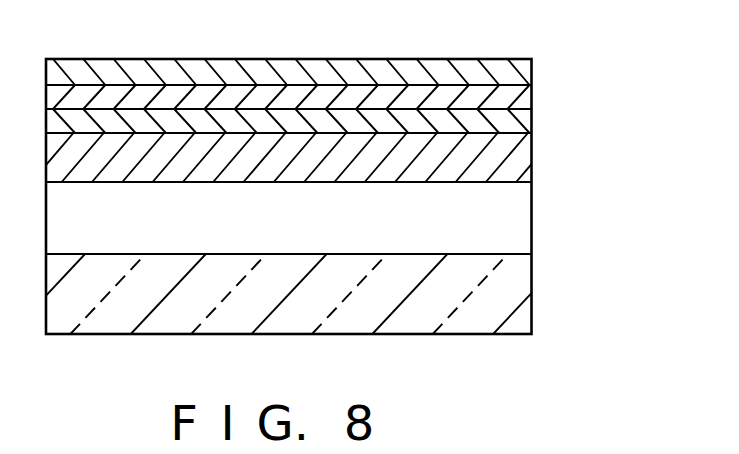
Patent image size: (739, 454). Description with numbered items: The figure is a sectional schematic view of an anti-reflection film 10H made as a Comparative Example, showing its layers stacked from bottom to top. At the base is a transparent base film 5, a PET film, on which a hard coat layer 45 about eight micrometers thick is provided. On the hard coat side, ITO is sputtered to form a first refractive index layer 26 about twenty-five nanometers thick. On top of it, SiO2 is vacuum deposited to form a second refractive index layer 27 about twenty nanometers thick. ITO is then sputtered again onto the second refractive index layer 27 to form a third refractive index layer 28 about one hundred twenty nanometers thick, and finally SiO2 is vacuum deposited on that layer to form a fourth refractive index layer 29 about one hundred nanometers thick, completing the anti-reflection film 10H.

The fourth refractive index layer 29 is at (532, 70).
The third refractive index layer 28 is at (532, 95).
The second refractive index layer 27 is at (532, 118).
The first refractive index layer 26 is at (532, 156).
The hard coat layer 45 is at (521, 216).
The transparent base film 5 is at (521, 282).
The anti-reflection film 10H is at (470, 347).